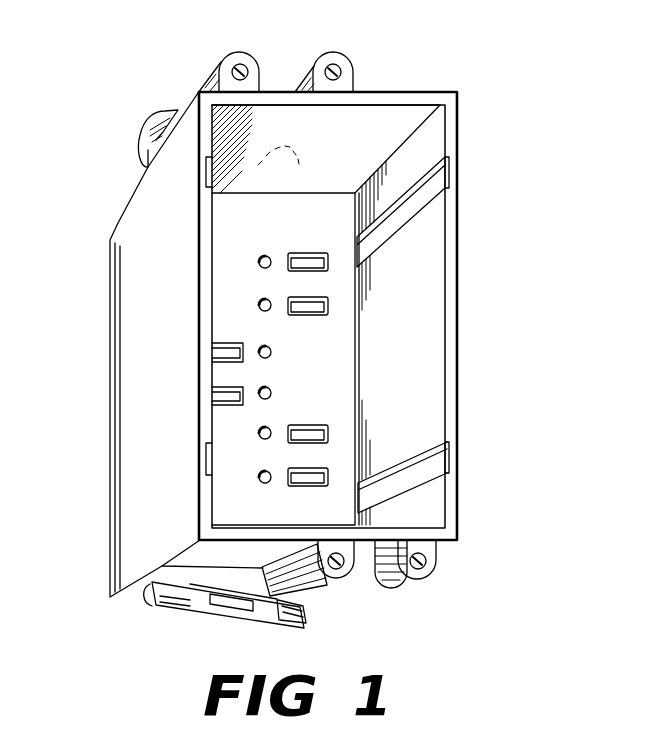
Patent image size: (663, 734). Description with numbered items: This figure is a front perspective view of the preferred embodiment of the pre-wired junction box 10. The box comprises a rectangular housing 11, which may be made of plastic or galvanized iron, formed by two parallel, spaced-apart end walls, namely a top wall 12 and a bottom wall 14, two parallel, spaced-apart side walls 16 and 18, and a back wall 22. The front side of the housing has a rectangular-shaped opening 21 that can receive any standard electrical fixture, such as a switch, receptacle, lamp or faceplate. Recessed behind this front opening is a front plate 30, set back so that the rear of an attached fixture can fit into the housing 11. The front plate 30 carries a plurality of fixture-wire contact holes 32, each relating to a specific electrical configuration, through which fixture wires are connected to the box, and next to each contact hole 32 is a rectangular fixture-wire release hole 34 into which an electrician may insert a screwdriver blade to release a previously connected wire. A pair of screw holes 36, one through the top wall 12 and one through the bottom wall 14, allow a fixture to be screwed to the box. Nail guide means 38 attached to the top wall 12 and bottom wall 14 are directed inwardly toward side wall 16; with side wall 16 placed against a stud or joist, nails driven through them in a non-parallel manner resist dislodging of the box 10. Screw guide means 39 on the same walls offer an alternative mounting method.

The pre-wired junction box 10 is at (128, 52).
The rectangular housing 11 is at (428, 92).
The top wall 12 is at (338, 163).
The bottom wall 14 is at (241, 580).
The side wall 16 is at (174, 386).
The side wall 18 is at (417, 383).
The rectangular-shaped opening 21 is at (412, 303).
The back wall 22 is at (108, 283).
The front plate 30 is at (284, 238).
The fixture-wire contact holes 32 is at (330, 433).
The fixture-wire release holes 34 is at (329, 307).
The screw holes 36 is at (332, 52).
The nail guide means 38 is at (150, 126).
The screw guide means 39 is at (233, 50).